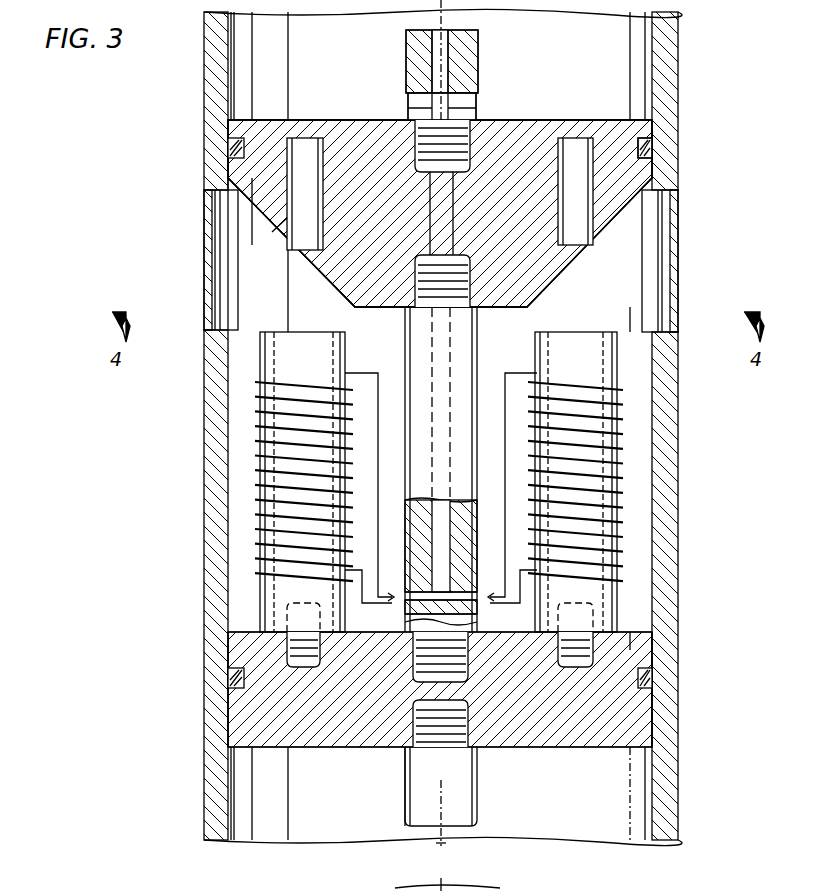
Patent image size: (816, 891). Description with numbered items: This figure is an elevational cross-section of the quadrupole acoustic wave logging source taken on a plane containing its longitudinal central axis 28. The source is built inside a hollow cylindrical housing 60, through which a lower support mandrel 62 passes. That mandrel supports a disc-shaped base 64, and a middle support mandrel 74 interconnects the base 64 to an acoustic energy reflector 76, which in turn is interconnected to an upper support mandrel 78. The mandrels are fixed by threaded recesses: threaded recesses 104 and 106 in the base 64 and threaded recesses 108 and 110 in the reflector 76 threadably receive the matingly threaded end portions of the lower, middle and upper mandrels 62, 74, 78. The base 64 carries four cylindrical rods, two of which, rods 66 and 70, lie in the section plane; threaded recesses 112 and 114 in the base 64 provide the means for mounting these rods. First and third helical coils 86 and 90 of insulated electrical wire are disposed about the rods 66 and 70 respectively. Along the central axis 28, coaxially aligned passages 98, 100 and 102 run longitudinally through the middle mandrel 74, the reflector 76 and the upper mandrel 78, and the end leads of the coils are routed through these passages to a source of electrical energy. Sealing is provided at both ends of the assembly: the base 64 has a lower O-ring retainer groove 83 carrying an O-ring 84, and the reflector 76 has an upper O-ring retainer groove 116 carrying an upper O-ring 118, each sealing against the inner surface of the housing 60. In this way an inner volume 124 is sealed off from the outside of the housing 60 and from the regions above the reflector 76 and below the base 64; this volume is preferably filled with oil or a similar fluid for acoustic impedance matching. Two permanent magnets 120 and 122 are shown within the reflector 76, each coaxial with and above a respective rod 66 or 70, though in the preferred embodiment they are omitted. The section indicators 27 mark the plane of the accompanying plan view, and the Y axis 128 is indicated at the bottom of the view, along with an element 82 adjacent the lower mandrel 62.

The ports 27 is at (206, 215).
The central axis 28 is at (446, 18).
The hollow cylindrical housing 60 is at (666, 585).
The lower support mandrel 62 is at (405, 812).
The disc-shaped base 64 is at (620, 752).
The cylindrical rod 66 is at (280, 515).
The cylindrical rod 70 is at (600, 480).
The middle support mandrel 74 is at (468, 378).
The acoustic energy reflector 76 is at (540, 268).
The upper support mandrel 78 is at (406, 45).
The lower member 82 is at (400, 890).
The lower O-ring retainer groove 83 is at (645, 695).
The O-ring 84 is at (654, 678).
The first helical coil 86 is at (290, 462).
The third helical coil 90 is at (618, 520).
The passage 98 is at (437, 346).
The passage 100 is at (445, 200).
The passage 102 is at (450, 86).
The threaded recess 104 is at (412, 748).
The threaded recess 106 is at (465, 660).
The threaded recess 108 is at (470, 300).
The threaded recess 110 is at (418, 130).
The threaded recess 112 is at (290, 650).
The threaded recess 114 is at (590, 652).
The upper O-ring retainer groove 116 is at (652, 132).
The upper O-ring 118 is at (652, 148).
The permanent magnet 120 is at (305, 152).
The permanent magnet 122 is at (575, 150).
The inner volume 124 is at (268, 258).
The Y axis 128 is at (443, 879).